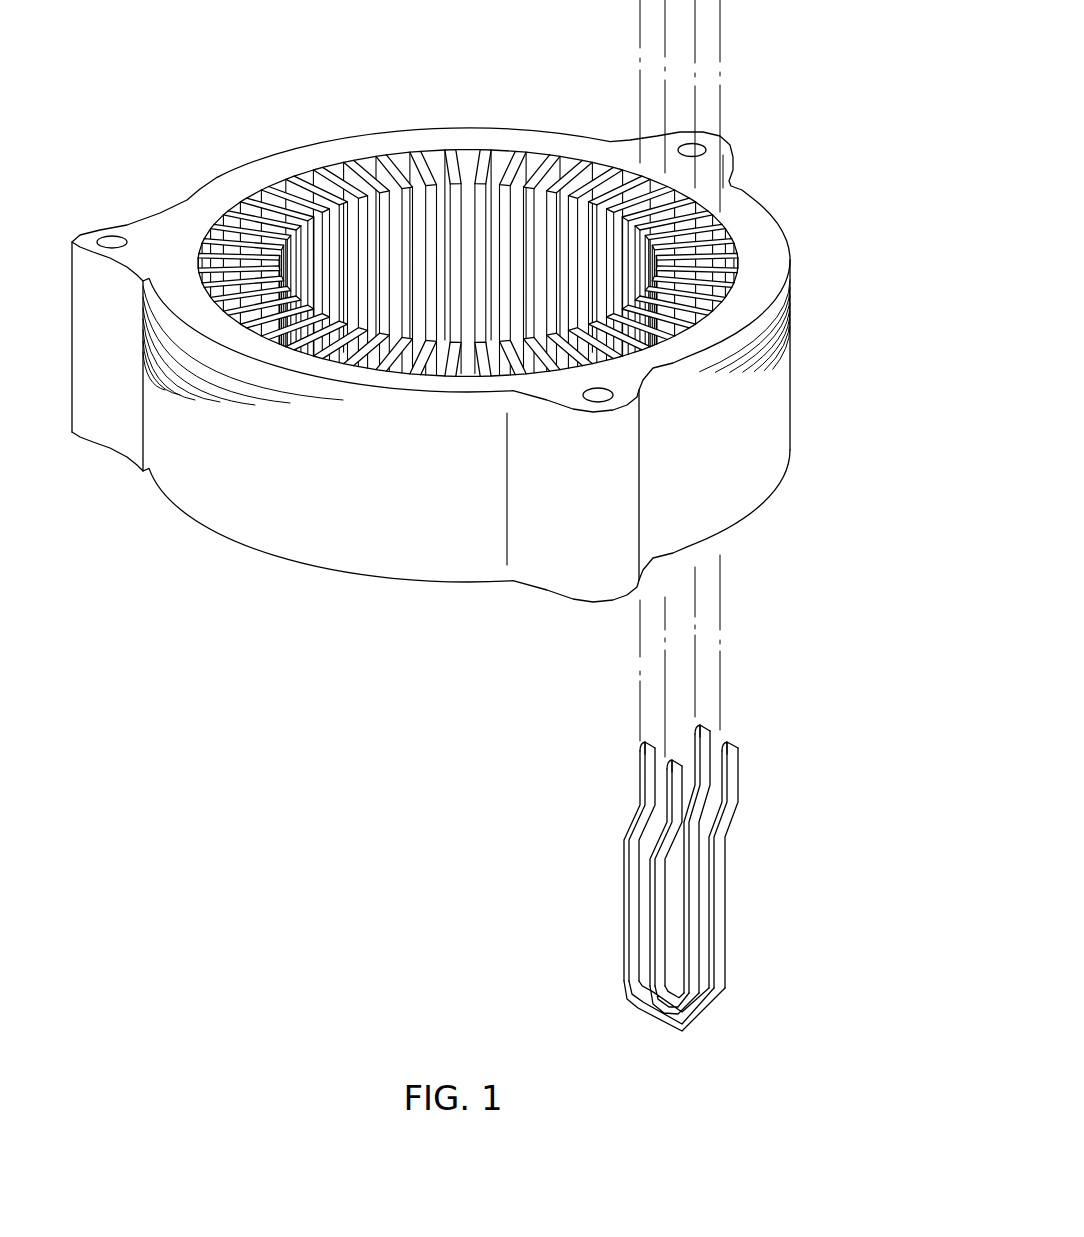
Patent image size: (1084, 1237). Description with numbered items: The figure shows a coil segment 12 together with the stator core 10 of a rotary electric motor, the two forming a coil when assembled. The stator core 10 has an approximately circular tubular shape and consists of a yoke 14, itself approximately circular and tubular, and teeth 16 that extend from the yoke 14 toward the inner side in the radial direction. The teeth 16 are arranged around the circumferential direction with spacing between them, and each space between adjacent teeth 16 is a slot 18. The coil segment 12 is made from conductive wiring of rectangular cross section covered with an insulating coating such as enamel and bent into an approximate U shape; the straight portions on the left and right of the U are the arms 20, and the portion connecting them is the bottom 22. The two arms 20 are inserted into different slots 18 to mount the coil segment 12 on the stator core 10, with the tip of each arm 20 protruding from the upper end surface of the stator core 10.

The stator core 10 is at (500, 301).
The coil segment 12 is at (740, 895).
The yoke 14 is at (230, 190).
The teeth 16 is at (317, 187).
The slot 18 is at (338, 170).
The arms 20 is at (718, 853).
The bottom 22 is at (707, 1005).